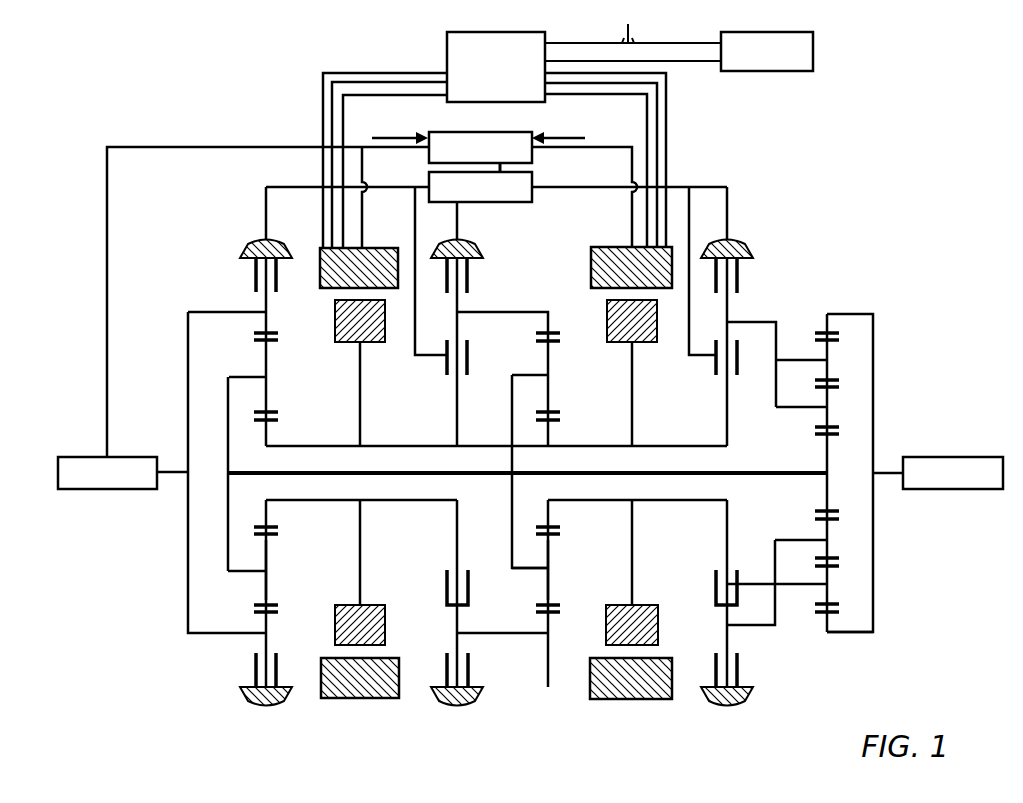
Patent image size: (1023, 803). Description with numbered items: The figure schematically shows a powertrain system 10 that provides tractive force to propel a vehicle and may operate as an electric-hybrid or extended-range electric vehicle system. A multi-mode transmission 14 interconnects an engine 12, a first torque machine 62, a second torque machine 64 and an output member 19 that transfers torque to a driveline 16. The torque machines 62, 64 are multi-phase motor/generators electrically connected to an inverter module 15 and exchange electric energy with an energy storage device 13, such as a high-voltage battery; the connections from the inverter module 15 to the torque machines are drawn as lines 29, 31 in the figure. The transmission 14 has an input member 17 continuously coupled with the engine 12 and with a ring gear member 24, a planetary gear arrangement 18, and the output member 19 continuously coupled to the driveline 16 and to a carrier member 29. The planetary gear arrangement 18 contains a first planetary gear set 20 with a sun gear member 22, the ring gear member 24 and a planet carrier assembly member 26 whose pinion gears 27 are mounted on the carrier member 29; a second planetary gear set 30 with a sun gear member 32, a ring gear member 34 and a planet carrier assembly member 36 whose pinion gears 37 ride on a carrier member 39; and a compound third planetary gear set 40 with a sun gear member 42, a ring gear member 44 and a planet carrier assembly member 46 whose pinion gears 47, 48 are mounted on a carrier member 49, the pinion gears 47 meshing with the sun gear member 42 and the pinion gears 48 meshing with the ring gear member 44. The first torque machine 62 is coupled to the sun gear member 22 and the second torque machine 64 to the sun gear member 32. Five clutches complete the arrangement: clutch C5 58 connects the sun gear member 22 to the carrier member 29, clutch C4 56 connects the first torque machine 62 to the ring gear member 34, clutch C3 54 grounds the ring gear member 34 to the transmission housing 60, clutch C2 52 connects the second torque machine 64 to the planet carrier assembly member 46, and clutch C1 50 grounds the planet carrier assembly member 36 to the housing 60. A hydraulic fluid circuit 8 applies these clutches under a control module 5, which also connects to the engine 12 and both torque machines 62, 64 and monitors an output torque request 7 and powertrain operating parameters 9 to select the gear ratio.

The control module 5 is at (474, 158).
The output torque request 7 is at (383, 134).
The hydraulic fluid circuit 8 is at (474, 197).
The powertrain operating parameters 9 is at (560, 134).
The powertrain system 10 is at (840, 202).
The engine 12 is at (97, 483).
The energy storage device 13 is at (757, 61).
The multi-mode transmission 14 is at (213, 229).
The inverter module 15 is at (487, 79).
The driveline 16 is at (943, 483).
The input member 17 is at (180, 477).
The planetary gear arrangement 18 is at (840, 284).
The output member 19 is at (878, 466).
The first planetary gear set 20 is at (213, 658).
The sun gear member 22 is at (270, 507).
The ring gear member 24 is at (270, 627).
The planet carrier assembly member 26 is at (243, 578).
The pinion gears 27 is at (270, 571).
The carrier member 29 is at (322, 82).
The second planetary gear set 30 is at (545, 652).
The control lines 31 is at (667, 128).
The sun gear member 32 is at (552, 507).
The ring gear member 34 is at (552, 630).
The planet carrier assembly member 36 is at (540, 576).
The pinion gears 37 is at (553, 571).
The carrier member 39 is at (510, 500).
The third planetary gear set 40 is at (826, 658).
The sun gear member 42 is at (824, 490).
The ring gear member 44 is at (825, 626).
The planet carrier assembly member 46 is at (775, 545).
The pinion gears 47 is at (830, 535).
The pinion gears 48 is at (830, 592).
The carrier member 49 is at (778, 585).
The clutch C1 50 is at (738, 278).
The clutch C2 52 is at (714, 358).
The clutch C3 54 is at (470, 267).
The clutch C4 56 is at (446, 358).
The clutch C5 58 is at (256, 282).
The transmission housing 60 is at (270, 707).
The first torque machine 62 is at (320, 250).
The second torque machine 64 is at (612, 247).